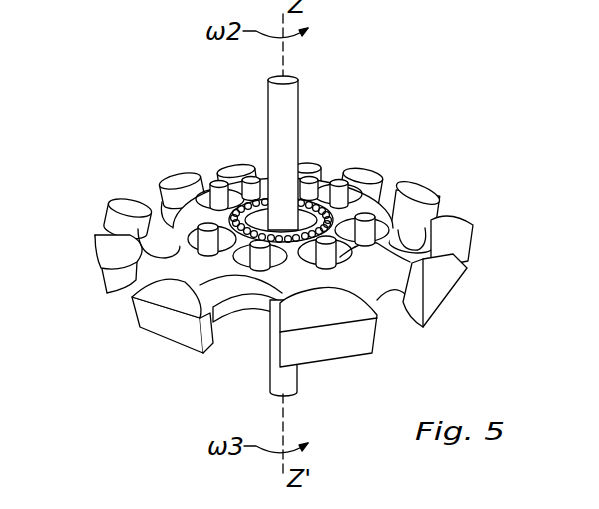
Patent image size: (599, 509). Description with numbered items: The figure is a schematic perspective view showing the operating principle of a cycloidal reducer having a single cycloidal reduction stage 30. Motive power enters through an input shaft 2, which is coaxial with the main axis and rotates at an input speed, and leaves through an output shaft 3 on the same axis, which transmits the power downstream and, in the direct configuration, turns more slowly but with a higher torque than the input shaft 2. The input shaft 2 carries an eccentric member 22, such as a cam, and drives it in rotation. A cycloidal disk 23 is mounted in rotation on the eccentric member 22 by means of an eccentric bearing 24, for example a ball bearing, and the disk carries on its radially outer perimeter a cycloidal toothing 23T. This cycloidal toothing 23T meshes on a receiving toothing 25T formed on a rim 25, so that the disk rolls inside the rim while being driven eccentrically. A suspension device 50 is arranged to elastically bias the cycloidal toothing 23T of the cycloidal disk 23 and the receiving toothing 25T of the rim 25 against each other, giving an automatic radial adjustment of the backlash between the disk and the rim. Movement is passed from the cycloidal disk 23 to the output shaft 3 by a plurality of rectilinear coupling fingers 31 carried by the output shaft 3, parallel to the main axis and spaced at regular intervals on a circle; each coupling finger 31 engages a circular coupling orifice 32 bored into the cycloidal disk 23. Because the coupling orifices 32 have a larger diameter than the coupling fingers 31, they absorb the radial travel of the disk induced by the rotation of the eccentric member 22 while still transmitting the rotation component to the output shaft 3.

The input shaft 2 is at (291, 100).
The output shaft 3 is at (300, 378).
The eccentric member 22 is at (303, 196).
The cycloidal disk 23 is at (414, 265).
The cycloidal toothing 23T is at (273, 310).
The eccentric bearing 24 is at (326, 202).
The rim 25 is at (458, 232).
The receiving toothing 25T is at (434, 270).
The single cycloidal reduction stage 30 is at (70, 200).
The coupling fingers 31 is at (400, 199).
The coupling orifices 32 is at (400, 229).
The suspension device 50 is at (222, 210).